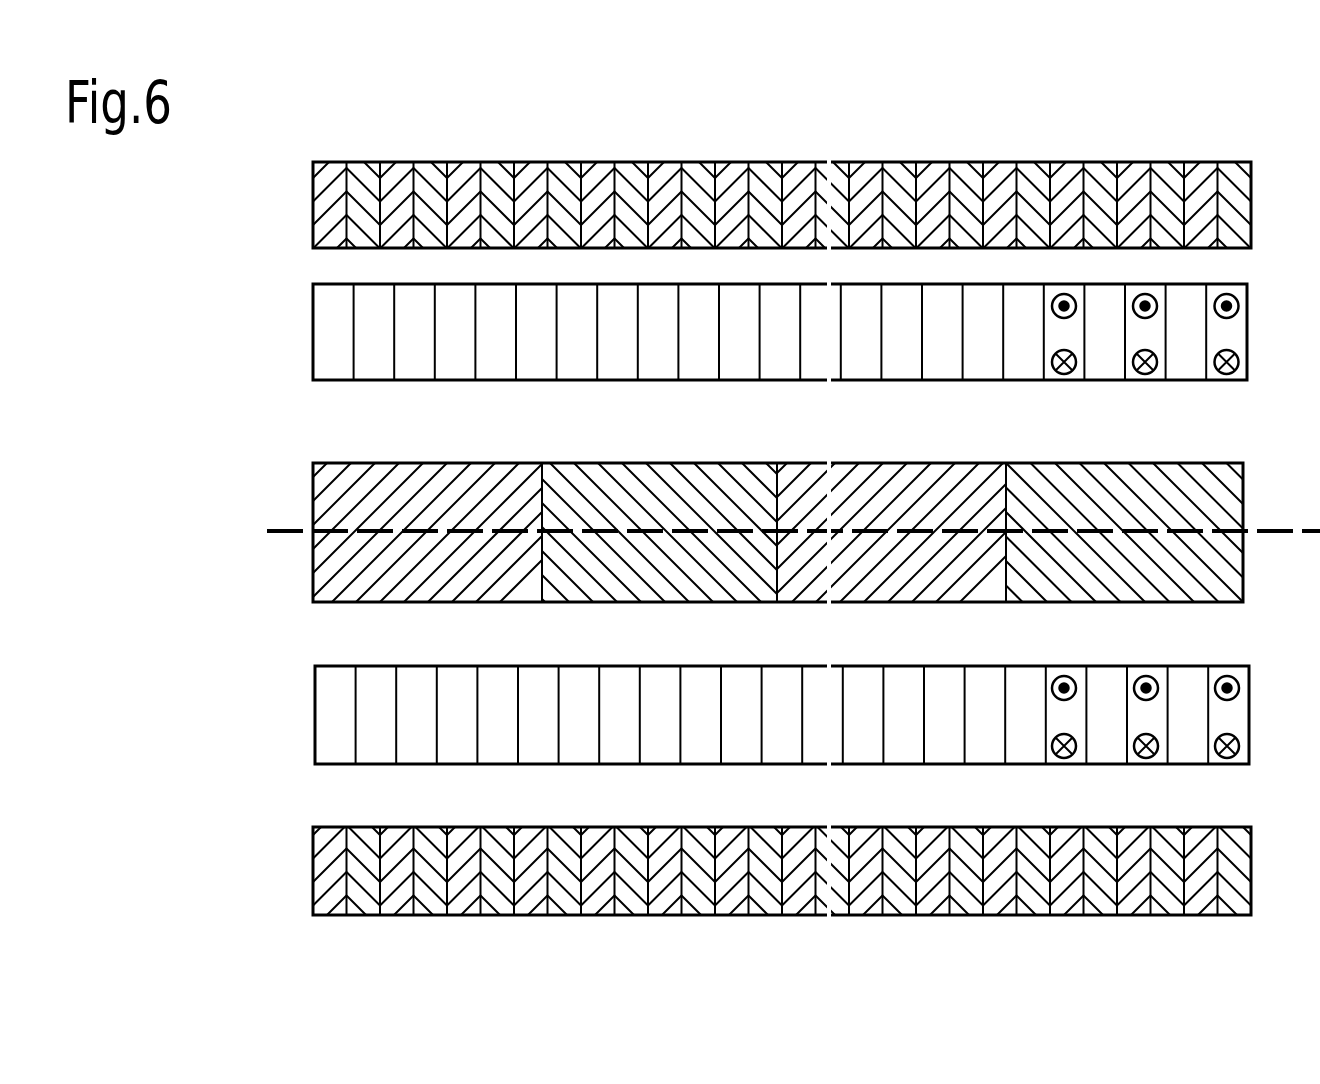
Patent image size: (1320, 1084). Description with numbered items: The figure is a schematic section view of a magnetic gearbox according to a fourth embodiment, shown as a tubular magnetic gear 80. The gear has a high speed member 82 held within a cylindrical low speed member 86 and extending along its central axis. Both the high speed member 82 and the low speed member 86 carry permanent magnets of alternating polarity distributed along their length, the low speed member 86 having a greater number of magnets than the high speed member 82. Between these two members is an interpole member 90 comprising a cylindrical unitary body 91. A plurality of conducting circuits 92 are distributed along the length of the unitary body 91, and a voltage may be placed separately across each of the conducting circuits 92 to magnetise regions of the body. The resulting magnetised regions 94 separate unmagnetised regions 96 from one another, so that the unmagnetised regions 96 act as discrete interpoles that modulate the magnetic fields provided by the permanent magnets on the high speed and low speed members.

The tubular magnetic gear 80 is at (740, 175).
The low speed member 86 is at (528, 178).
The magnetised regions 94 is at (746, 350).
The unmagnetised regions 96 is at (372, 368).
The high speed member 82 is at (1210, 490).
The interpole member 90 is at (755, 742).
The cylindrical unitary body 91 is at (375, 748).
The conducting circuits 92 is at (1233, 722).